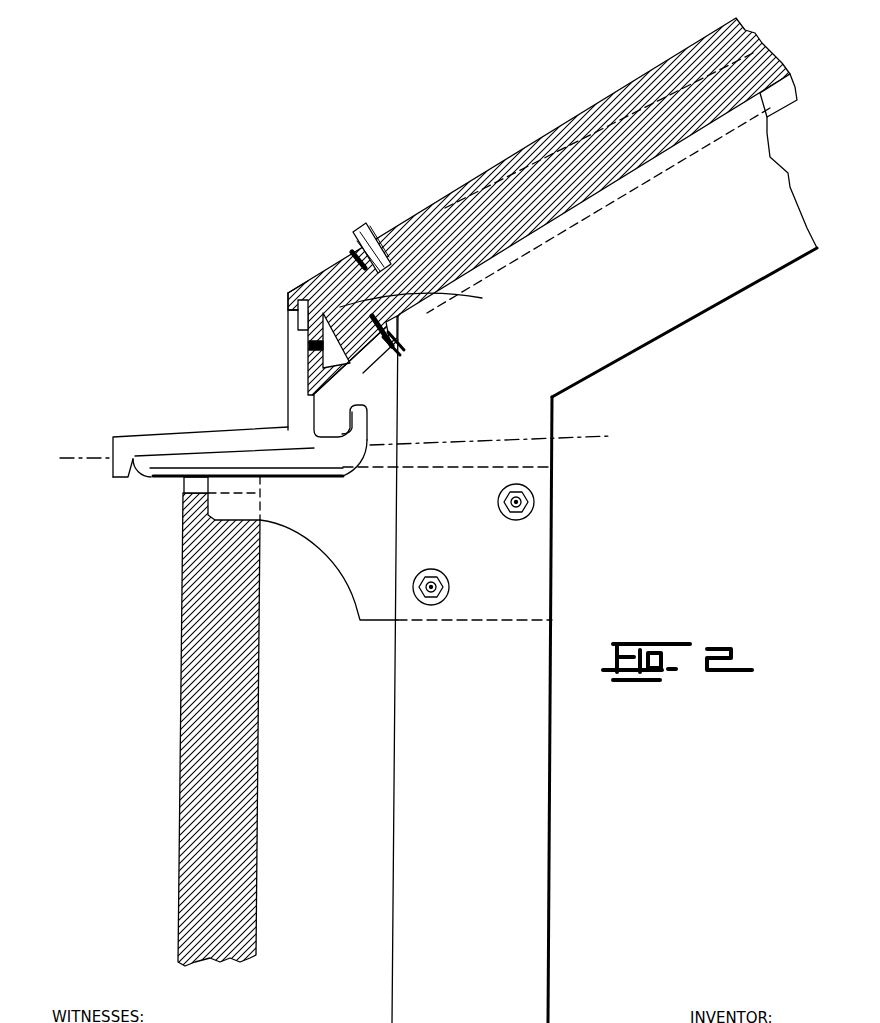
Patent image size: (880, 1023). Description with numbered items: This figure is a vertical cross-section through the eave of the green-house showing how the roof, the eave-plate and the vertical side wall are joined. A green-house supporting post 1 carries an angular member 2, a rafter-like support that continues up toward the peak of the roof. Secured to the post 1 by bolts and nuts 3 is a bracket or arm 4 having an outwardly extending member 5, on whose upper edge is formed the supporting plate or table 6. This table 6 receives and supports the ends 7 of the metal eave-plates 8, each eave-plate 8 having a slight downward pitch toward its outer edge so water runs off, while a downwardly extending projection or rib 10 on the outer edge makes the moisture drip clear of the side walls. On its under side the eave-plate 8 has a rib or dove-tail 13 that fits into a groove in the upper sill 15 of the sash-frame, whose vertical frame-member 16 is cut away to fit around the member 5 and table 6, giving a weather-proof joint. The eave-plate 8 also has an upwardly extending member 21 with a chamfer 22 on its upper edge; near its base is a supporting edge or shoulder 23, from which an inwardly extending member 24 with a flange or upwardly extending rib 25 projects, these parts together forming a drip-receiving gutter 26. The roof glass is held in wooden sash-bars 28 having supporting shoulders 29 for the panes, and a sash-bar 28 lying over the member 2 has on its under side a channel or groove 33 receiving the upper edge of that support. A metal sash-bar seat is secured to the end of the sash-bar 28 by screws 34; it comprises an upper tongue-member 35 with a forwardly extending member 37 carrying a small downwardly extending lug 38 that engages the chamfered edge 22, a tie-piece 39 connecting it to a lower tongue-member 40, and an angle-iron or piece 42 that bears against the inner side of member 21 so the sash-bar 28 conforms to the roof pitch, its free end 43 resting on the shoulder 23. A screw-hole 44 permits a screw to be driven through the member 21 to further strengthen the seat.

The green-house supporting post 1 is at (540, 893).
The angular member 2 is at (658, 333).
The bolts and nuts 3 is at (534, 502).
The bracket or arm 4 is at (533, 630).
The outwardly extending member 5 is at (337, 545).
The supporting plate or table 6 is at (153, 478).
The ends of eave-plates 7 is at (203, 442).
The eave-plate 8 is at (150, 437).
The downwardly extending projection or rib 10 is at (115, 478).
The rib or dove-tail 13 is at (220, 462).
The upper sill 15 is at (192, 487).
The vertical frame-member 16 is at (250, 768).
The upwardly extending member 21 is at (300, 373).
The chamfer 22 is at (298, 318).
The supporting edge or shoulder 23 is at (317, 397).
The inwardly extending member 24 is at (340, 440).
The flange or upwardly extending rib 25 is at (364, 420).
The drip-receiving gutter 26 is at (337, 425).
The sash-bar 28 is at (513, 197).
The supporting shoulders 29 is at (600, 128).
The channel or groove 33 is at (778, 100).
The screws 34 is at (358, 242).
The upper tongue-member 35 is at (352, 252).
The forwardly extending member 37 is at (290, 288).
The downwardly extending lug 38 is at (290, 305).
The tie-piece 39 is at (430, 303).
The lower tongue-member 40 is at (403, 333).
The angle-iron or piece 42 is at (363, 373).
The free end 43 is at (305, 383).
The screw-hole 44 is at (308, 345).